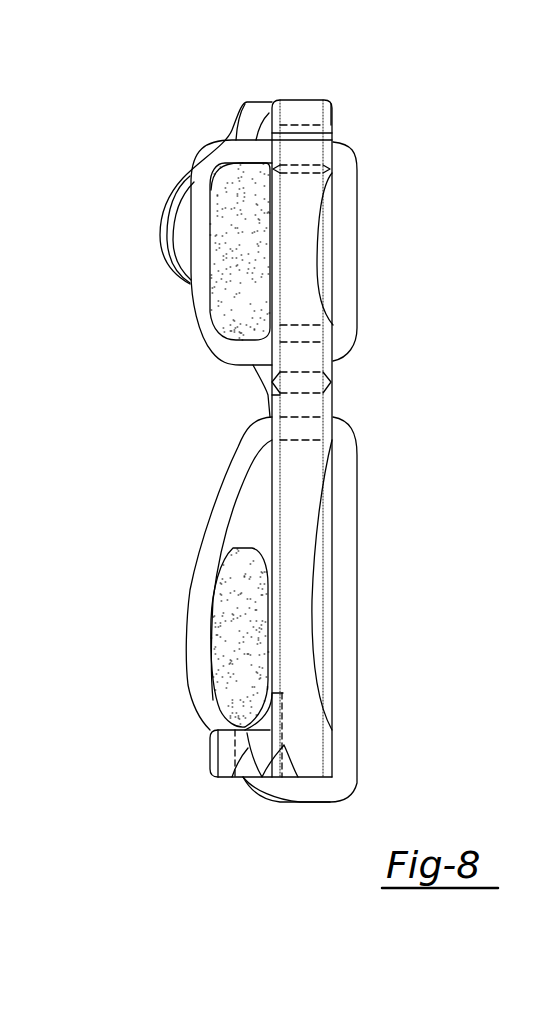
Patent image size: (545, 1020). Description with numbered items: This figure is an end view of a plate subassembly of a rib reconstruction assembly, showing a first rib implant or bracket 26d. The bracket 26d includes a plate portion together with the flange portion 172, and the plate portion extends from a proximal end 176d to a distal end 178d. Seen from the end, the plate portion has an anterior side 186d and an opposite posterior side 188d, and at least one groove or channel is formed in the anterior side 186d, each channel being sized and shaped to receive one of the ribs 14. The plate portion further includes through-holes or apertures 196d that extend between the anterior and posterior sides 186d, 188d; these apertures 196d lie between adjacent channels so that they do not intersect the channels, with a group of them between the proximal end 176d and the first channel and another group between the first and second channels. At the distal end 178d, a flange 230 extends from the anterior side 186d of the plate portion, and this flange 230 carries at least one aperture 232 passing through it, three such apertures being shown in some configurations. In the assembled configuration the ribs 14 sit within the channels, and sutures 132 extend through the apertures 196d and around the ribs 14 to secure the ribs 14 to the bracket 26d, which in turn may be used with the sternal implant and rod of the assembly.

The ribs 14 is at (253, 253).
The bracket 26d is at (230, 101).
The suture 132 is at (343, 445).
The flange portion 172 is at (165, 220).
The proximal end 176d is at (312, 102).
The distal end 178d is at (303, 780).
The anterior side 186d is at (268, 395).
The posterior side 188d is at (334, 110).
The aperture 196d is at (300, 173).
The flange 230 is at (208, 750).
The aperture 232 is at (235, 780).